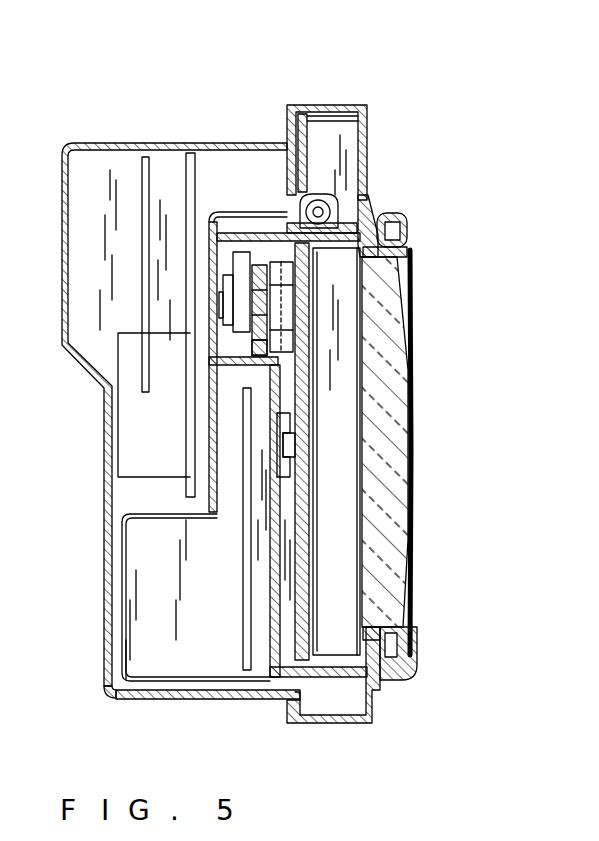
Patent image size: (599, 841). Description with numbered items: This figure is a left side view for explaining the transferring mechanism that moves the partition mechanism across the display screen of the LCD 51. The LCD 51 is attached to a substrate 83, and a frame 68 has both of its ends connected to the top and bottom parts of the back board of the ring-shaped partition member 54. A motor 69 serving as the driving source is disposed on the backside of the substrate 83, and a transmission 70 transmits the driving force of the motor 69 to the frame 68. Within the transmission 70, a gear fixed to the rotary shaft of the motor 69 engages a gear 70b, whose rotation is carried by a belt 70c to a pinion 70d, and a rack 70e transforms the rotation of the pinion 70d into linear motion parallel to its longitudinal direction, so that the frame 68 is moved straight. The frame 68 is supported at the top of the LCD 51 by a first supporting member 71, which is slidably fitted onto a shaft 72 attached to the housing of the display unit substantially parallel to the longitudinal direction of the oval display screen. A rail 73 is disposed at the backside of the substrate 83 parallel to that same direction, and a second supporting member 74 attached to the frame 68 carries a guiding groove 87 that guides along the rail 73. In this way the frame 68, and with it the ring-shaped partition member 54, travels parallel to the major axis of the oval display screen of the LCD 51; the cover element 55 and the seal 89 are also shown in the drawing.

The LCD 51 is at (335, 550).
The ring-shaped partition member 54 is at (377, 268).
The transparent cover 55 is at (377, 323).
The frame 68 is at (270, 640).
The motor 69 is at (400, 234).
The transmission 70 is at (246, 258).
The gear 70b is at (262, 346).
The belt 70c is at (238, 272).
The pinion 70d is at (256, 270).
The rack 70e is at (270, 262).
The first supporting member 71 is at (330, 205).
The shaft 72 is at (309, 117).
The rail 73 is at (295, 445).
The second supporting member 74 is at (282, 470).
The substrate 83 is at (320, 673).
The guiding groove 87 is at (293, 433).
The seal 89 is at (385, 225).